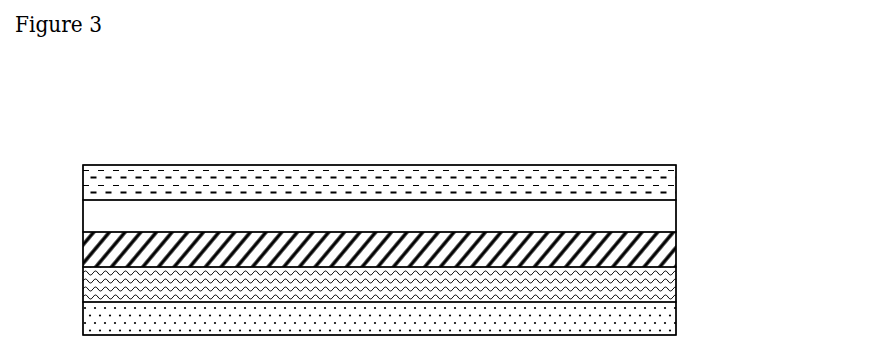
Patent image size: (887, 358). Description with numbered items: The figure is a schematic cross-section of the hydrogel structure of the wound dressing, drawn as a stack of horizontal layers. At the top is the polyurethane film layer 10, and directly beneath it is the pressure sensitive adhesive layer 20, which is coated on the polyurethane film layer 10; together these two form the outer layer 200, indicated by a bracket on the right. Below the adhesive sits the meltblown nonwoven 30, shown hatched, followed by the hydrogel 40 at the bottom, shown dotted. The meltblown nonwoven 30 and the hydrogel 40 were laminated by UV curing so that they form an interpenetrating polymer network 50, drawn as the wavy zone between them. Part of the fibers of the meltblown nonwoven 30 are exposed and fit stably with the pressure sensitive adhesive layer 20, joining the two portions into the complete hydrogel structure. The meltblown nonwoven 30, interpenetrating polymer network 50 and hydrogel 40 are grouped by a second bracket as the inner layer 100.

The polyurethane film layer 10 is at (660, 182).
The pressure sensitive adhesive layer 20 is at (411, 216).
The meltblown nonwoven 30 is at (660, 250).
The hydrogel 40 is at (660, 318).
The interpenetrating polymer network 50 is at (660, 283).
The inner layer 100 is at (478, 283).
The outer layer 200 is at (459, 198).